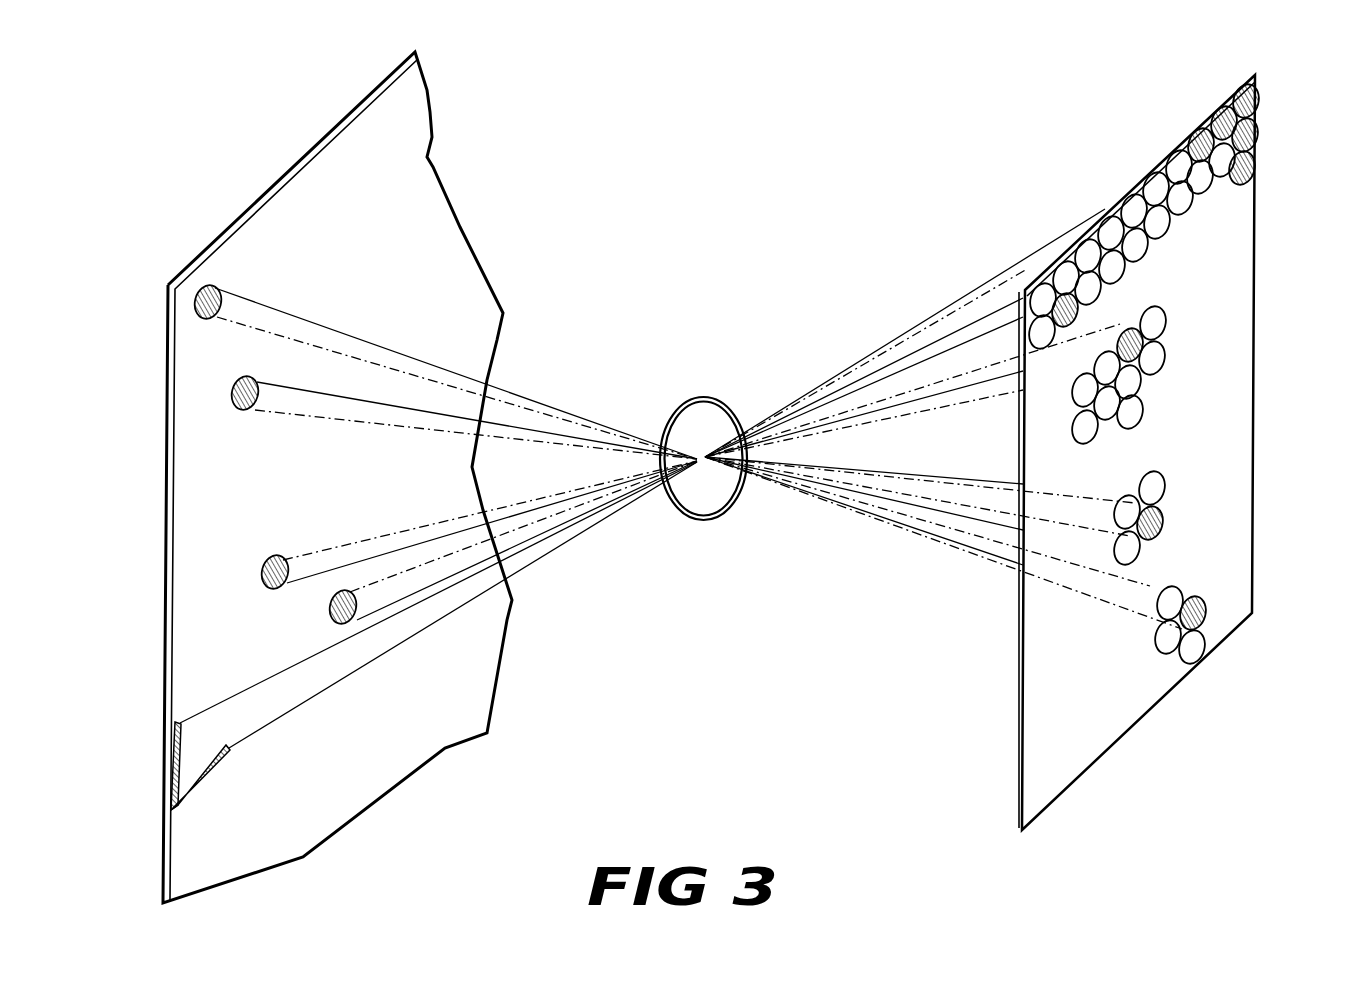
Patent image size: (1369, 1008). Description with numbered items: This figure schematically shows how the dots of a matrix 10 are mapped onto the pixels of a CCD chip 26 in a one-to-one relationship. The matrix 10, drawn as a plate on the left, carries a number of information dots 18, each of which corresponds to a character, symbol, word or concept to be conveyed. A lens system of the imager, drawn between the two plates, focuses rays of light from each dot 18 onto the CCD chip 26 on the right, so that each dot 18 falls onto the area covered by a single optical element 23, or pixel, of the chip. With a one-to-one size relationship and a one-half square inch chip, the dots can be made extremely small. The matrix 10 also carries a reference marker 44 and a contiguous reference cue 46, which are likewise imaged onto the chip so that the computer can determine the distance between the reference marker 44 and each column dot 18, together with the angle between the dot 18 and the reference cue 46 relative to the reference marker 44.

The matrix 10 is at (198, 548).
The dot 18 is at (244, 411).
The optical element 23 is at (1152, 489).
The CCD chip 26 is at (1093, 694).
The reference marker 44 is at (176, 766).
The reference cue 46 is at (203, 783).